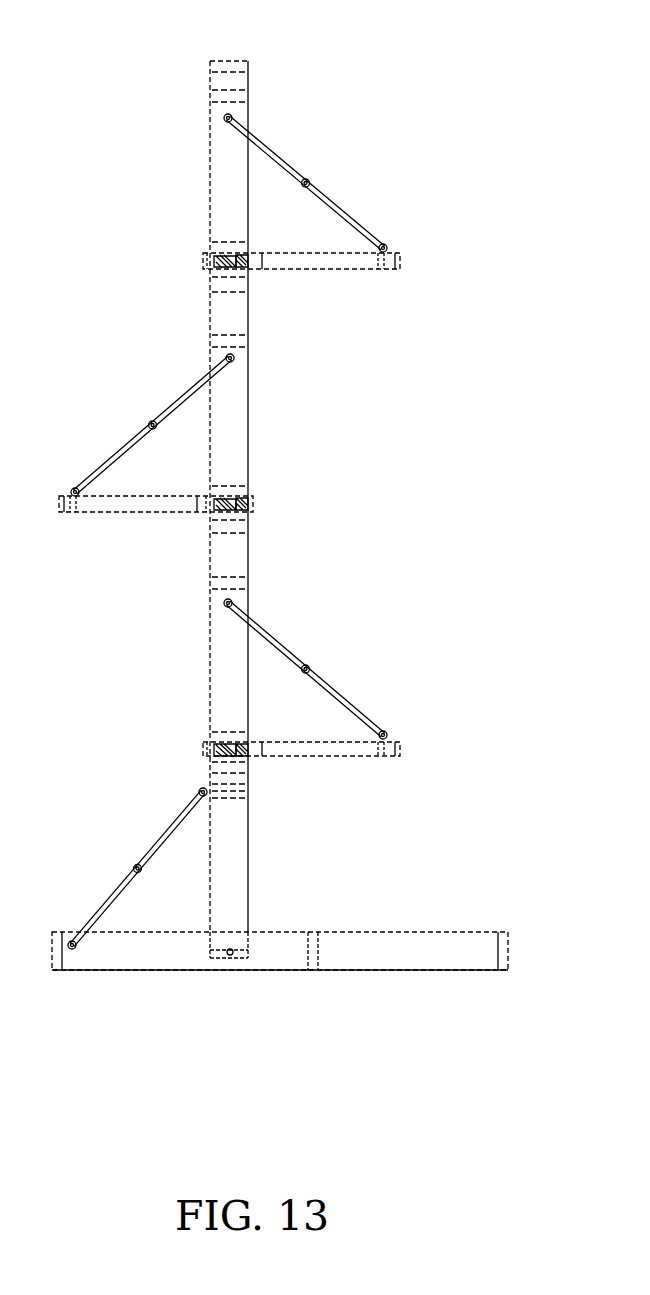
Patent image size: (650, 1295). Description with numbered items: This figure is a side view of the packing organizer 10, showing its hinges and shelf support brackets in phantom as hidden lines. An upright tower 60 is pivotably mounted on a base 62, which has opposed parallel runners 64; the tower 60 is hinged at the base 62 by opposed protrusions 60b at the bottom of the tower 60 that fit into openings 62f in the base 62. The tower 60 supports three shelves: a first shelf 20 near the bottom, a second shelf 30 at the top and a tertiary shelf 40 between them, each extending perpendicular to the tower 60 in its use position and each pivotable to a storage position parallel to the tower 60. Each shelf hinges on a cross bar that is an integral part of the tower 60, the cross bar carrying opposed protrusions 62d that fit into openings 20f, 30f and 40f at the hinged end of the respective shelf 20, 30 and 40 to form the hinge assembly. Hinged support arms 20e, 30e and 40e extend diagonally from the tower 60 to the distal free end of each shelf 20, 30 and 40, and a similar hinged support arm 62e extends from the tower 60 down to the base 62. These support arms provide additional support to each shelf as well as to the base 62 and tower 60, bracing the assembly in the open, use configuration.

The storage rack assembly 10 is at (375, 66).
The tower 60 is at (252, 414).
The protrusion 60b is at (233, 948).
The base 62 is at (408, 929).
The protrusion 62d is at (234, 263).
The hinged support arm 62e is at (155, 838).
The opening 62f is at (226, 962).
The runner 64 is at (427, 972).
The second shelf 30 is at (366, 273).
The hinged support arm 30e is at (348, 210).
The opening 30f is at (222, 257).
The tertiary shelf 40 is at (133, 519).
The hinged support arm 40e is at (113, 450).
The opening 40f is at (243, 500).
The first shelf 20 is at (301, 749).
The hinged support arm 20e is at (337, 688).
The opening 20f is at (229, 753).